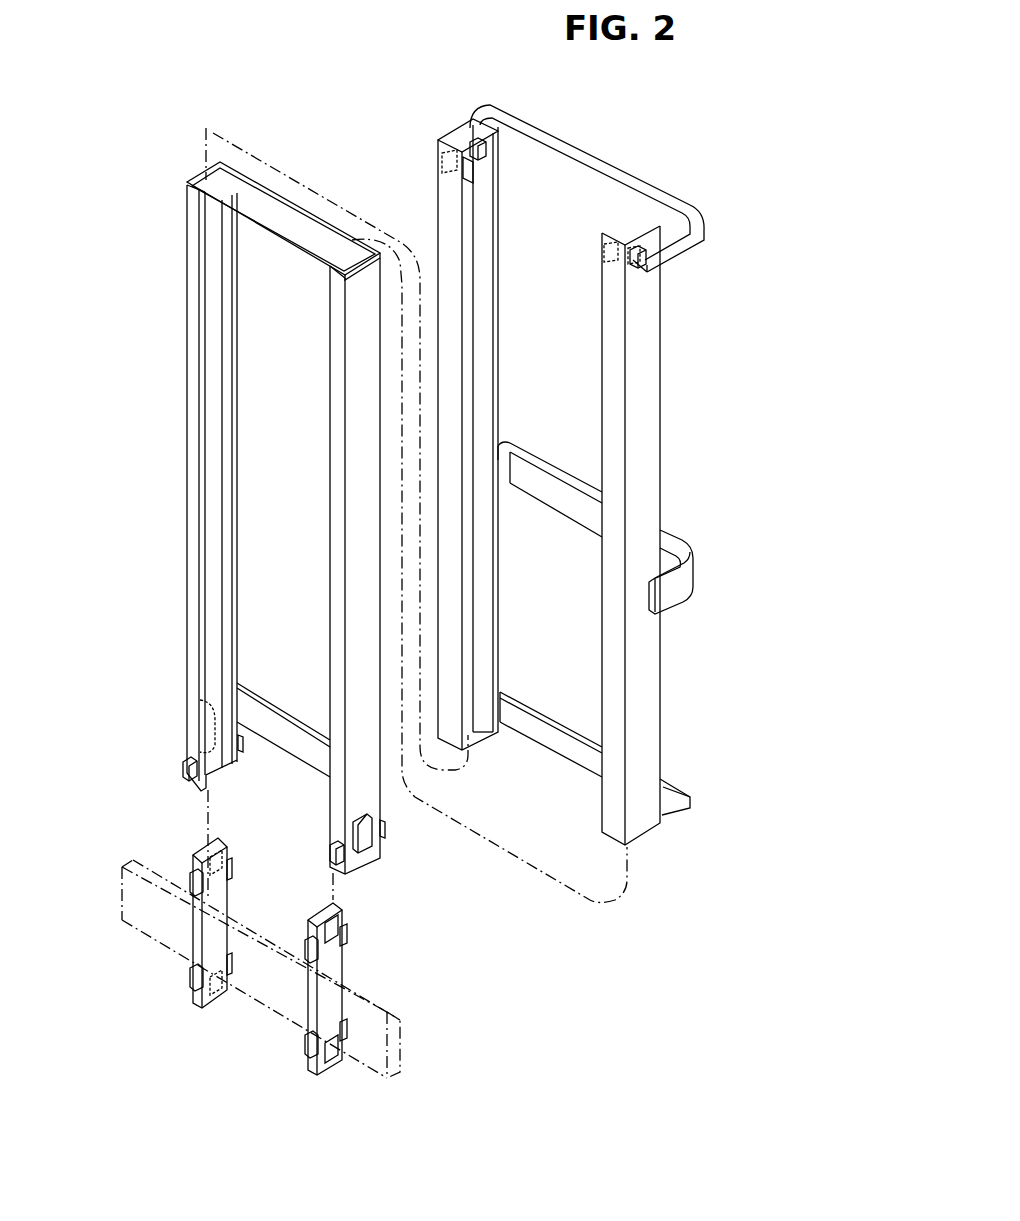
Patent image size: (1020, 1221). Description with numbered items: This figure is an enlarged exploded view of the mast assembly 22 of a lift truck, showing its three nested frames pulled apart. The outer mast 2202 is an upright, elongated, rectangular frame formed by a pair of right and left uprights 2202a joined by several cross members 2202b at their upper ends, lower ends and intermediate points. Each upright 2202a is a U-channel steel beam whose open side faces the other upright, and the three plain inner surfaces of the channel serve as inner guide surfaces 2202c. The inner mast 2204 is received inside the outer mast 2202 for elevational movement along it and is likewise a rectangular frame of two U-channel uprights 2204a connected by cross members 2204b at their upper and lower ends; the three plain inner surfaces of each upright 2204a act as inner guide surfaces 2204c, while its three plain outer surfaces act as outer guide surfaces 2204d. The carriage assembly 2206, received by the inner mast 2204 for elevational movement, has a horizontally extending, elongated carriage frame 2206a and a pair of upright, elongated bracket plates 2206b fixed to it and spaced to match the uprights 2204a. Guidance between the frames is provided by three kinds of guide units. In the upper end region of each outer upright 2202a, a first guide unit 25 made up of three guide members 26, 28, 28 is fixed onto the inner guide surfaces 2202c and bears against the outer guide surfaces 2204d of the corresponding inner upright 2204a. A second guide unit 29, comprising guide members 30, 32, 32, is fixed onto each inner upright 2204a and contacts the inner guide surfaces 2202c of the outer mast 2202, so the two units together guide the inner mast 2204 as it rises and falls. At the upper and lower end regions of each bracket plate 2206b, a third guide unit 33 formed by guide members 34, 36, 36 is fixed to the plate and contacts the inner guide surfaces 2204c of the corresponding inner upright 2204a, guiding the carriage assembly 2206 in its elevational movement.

The mast assembly 22 is at (330, 126).
The first guide unit 25 is at (455, 106).
The guide member 26 is at (480, 162).
The guide member 28 is at (472, 120).
The second guide unit 29 is at (396, 848).
The guide member 30 is at (203, 703).
The guide member 32 is at (242, 742).
The third guide unit 33 is at (187, 836).
The guide member 34 is at (212, 855).
The guide member 36 is at (190, 873).
The outer mast 2202 is at (556, 447).
The upright 2202a is at (440, 190).
The cross member 2202b is at (585, 140).
The inner guide surface 2202c is at (620, 230).
The inner mast 2204 is at (227, 477).
The upright 2204a is at (186, 402).
The cross member 2204b is at (262, 195).
The inner guide surface 2204c is at (205, 410).
The outer guide surface 2204d is at (222, 165).
The carriage assembly 2206 is at (271, 952).
The carriage frame 2206a is at (265, 1003).
The bracket plate 2206b is at (190, 928).